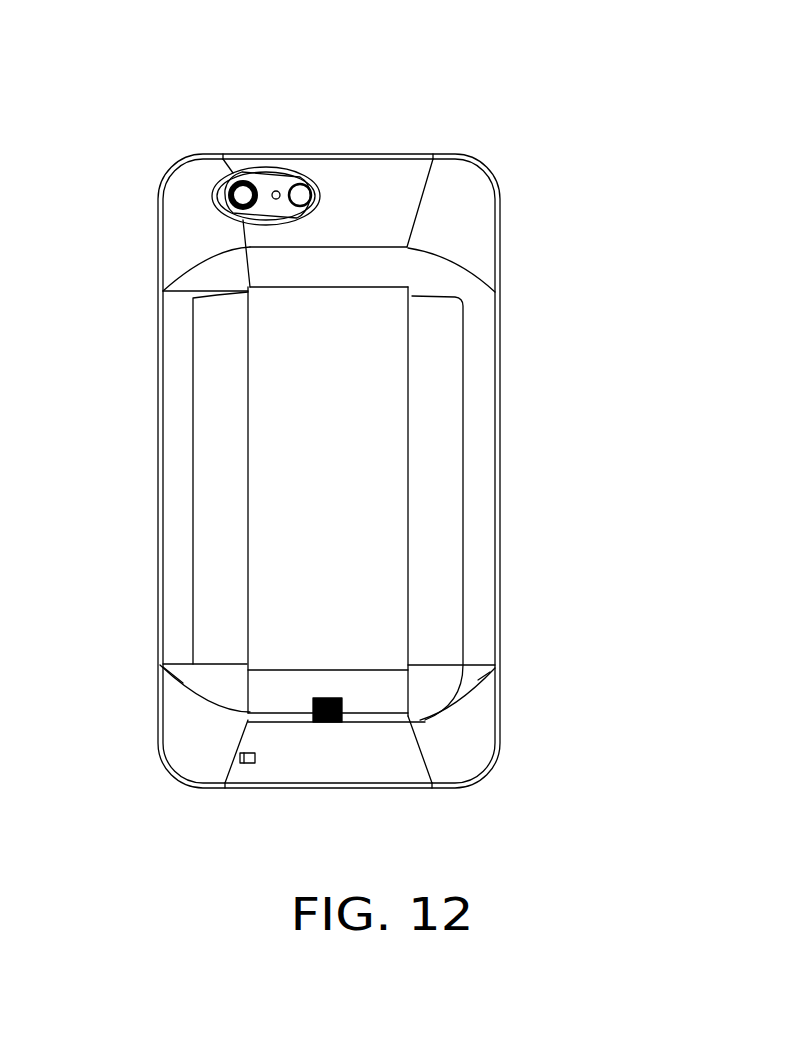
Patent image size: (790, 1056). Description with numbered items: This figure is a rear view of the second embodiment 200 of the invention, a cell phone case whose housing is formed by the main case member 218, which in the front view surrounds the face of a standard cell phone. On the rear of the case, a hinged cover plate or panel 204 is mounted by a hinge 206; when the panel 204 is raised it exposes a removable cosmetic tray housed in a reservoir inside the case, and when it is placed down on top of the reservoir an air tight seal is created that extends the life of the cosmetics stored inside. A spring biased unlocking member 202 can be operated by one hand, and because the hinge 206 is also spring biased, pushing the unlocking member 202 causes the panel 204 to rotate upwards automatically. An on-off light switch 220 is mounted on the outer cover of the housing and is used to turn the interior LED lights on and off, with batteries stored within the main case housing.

The second embodiment 200 is at (467, 80).
The spring biased unlocking member 202 is at (342, 705).
The panel 204 is at (440, 463).
The hinge 206 is at (407, 272).
The main case member 218 is at (157, 423).
The on-off light switch 220 is at (240, 763).